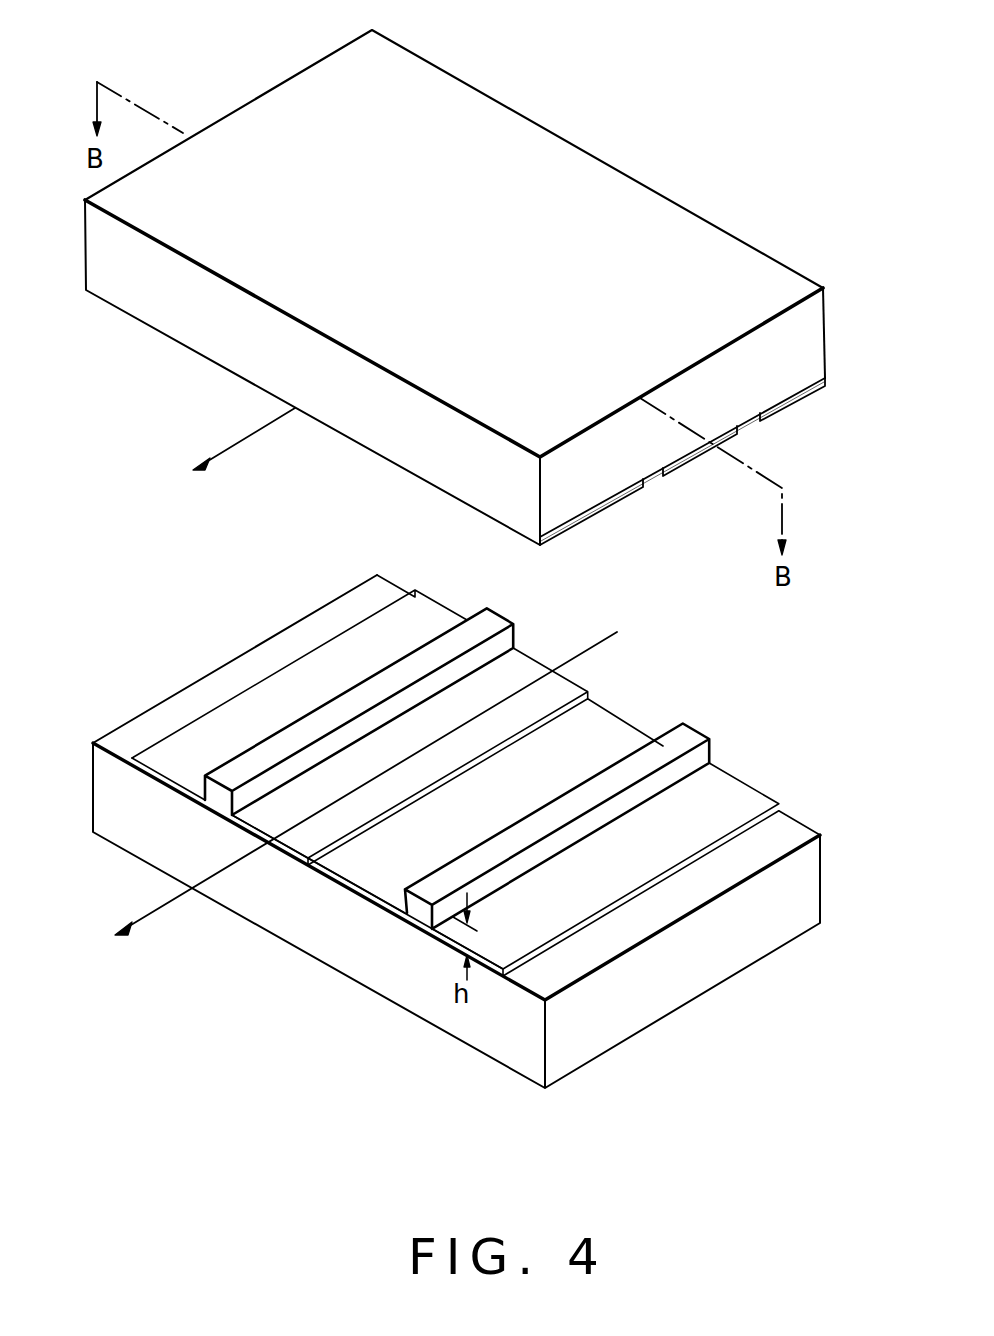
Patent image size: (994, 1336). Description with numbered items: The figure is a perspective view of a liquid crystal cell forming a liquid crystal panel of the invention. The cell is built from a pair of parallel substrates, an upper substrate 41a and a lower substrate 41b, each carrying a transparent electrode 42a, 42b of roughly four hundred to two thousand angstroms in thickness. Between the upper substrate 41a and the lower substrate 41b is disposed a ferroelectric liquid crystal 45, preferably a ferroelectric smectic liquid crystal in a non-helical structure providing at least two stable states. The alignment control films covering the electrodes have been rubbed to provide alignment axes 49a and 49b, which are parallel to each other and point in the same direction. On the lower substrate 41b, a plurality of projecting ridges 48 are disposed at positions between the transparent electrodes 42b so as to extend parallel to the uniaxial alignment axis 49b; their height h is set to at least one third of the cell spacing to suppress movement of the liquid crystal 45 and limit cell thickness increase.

The upper substrate 41a is at (803, 337).
The transparent electrode 42a is at (792, 402).
The ferroelectric liquid crystal 45 is at (600, 581).
The alignment axis 49a is at (220, 460).
The lower substrate 41b is at (823, 878).
The transparent electrode 42b is at (757, 793).
The projecting ridges 48 is at (703, 731).
The alignment axis 49b is at (330, 807).